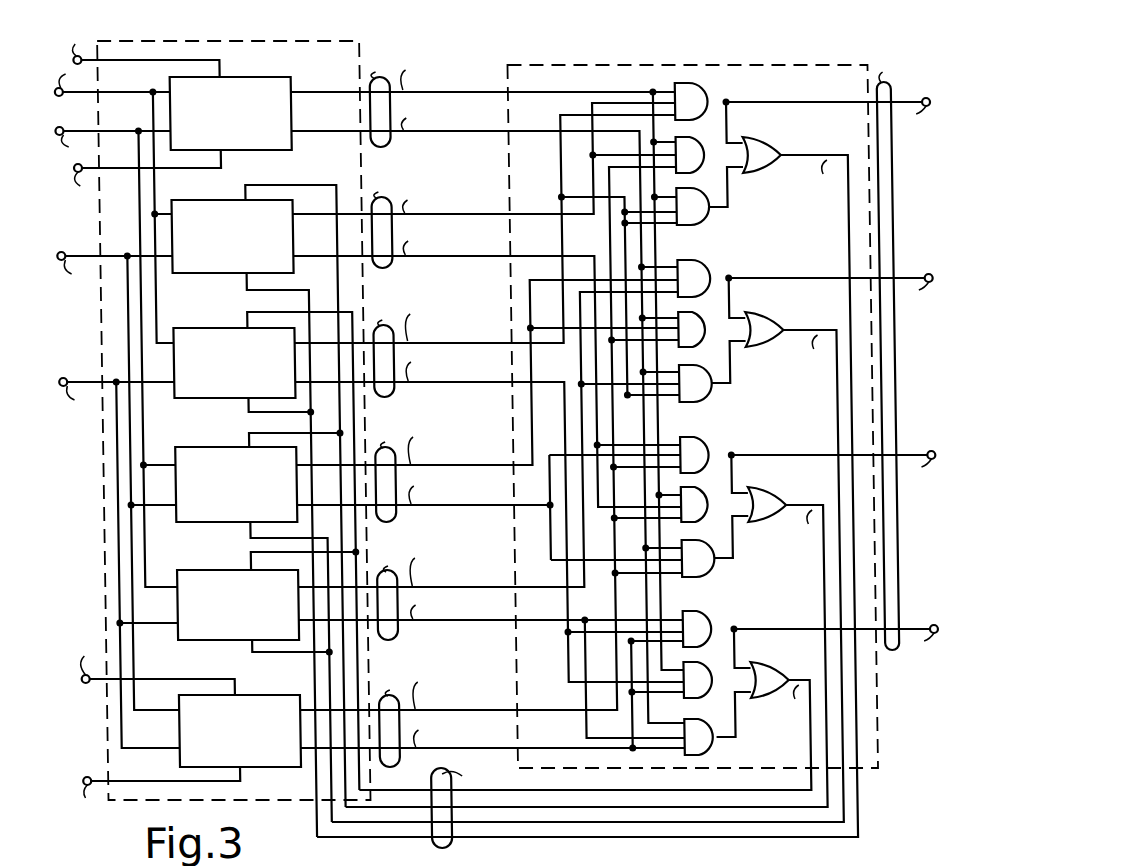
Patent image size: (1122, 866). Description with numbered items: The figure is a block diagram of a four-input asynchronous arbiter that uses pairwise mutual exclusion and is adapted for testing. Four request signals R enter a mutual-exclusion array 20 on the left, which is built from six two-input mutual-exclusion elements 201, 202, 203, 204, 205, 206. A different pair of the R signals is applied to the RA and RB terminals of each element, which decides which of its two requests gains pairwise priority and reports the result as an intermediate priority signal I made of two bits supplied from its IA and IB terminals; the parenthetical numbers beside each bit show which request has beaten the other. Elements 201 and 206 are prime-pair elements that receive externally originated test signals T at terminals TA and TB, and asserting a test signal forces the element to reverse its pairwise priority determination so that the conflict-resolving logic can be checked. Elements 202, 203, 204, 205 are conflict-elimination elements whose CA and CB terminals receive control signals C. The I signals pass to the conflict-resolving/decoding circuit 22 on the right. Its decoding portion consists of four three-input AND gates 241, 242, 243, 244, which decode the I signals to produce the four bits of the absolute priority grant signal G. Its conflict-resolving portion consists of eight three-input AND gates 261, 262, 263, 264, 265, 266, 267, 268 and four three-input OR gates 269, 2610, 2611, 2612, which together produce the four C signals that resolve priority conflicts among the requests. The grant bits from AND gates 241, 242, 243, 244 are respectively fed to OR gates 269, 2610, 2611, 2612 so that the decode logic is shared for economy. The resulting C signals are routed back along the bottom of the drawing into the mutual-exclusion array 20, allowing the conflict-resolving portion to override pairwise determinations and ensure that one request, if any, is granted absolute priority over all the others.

The mutual-exclusion array 20 is at (359, 41).
The conflict-resolving/decoding circuit 22 is at (868, 65).
The prime-pair mutual-exclusion element 201 is at (291, 146).
The conflict-elimination mutual-exclusion element 202 is at (234, 273).
The conflict-elimination mutual-exclusion element 203 is at (228, 398).
The conflict-elimination mutual-exclusion element 204 is at (230, 522).
The conflict-elimination mutual-exclusion element 205 is at (230, 640).
The prime-pair mutual-exclusion element 206 is at (249, 695).
The three-input AND gate 241 is at (715, 75).
The three-input AND gate 242 is at (715, 252).
The three-input AND gate 243 is at (715, 429).
The three-input AND gate 244 is at (715, 603).
The three-input AND gate 261 is at (705, 168).
The three-input AND gate 262 is at (705, 219).
The three-input AND gate 263 is at (705, 343).
The three-input AND gate 264 is at (705, 396).
The three-input AND gate 265 is at (705, 518).
The three-input AND gate 266 is at (705, 571).
The three-input AND gate 267 is at (705, 693).
The three-input AND gate 268 is at (705, 750).
The three-input OR gate 269 is at (760, 139).
The three-input OR gate 2610 is at (760, 314).
The three-input OR gate 2611 is at (760, 489).
The three-input OR gate 2612 is at (760, 664).